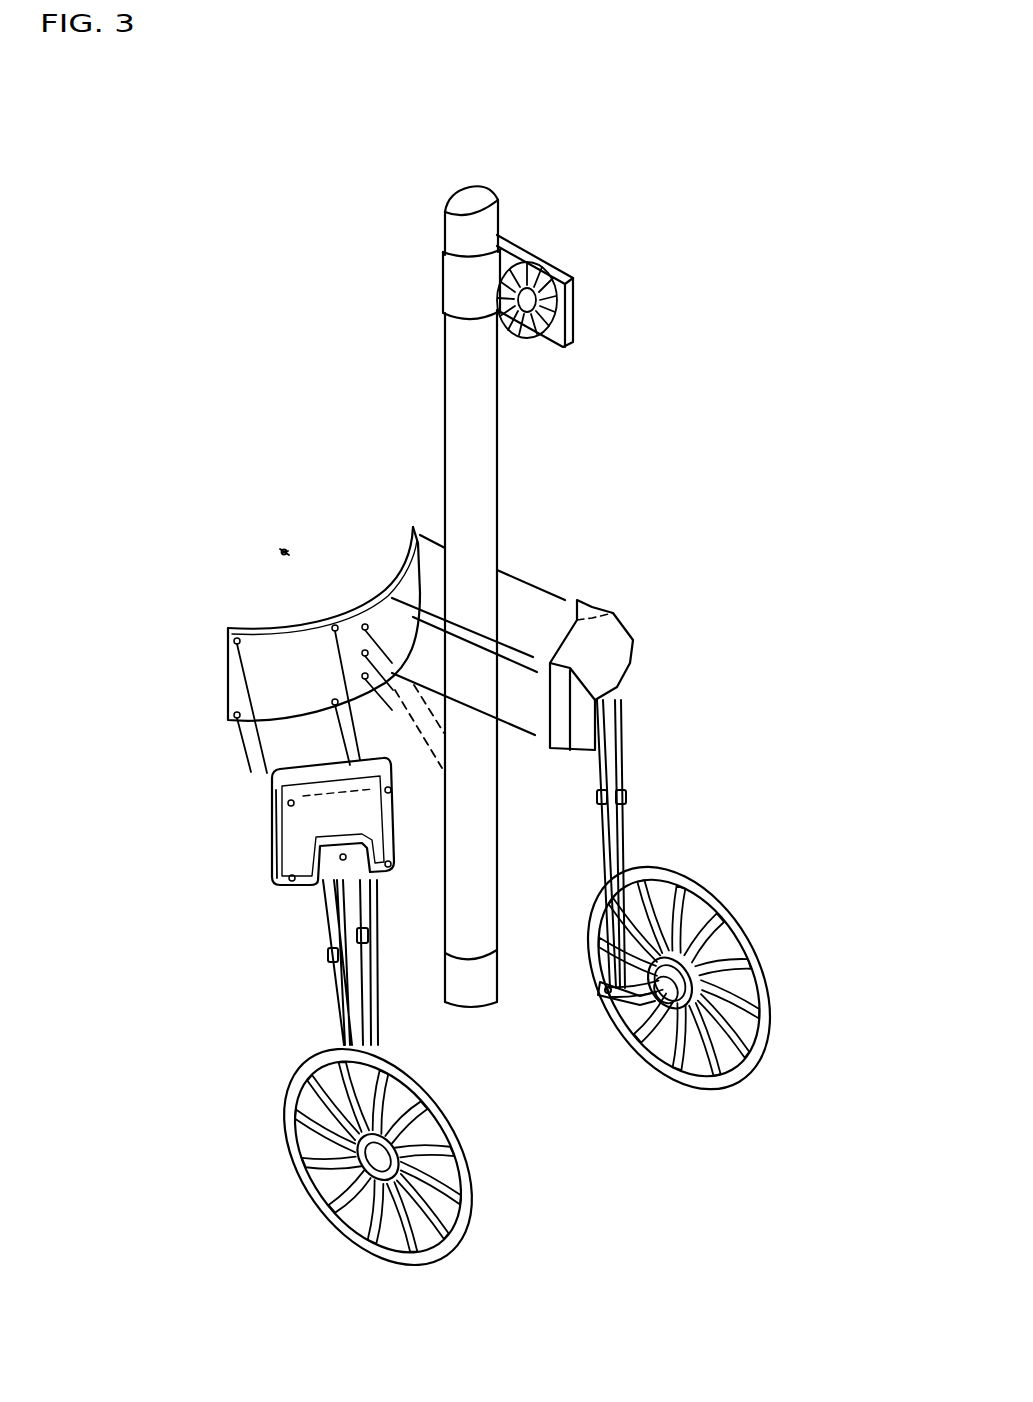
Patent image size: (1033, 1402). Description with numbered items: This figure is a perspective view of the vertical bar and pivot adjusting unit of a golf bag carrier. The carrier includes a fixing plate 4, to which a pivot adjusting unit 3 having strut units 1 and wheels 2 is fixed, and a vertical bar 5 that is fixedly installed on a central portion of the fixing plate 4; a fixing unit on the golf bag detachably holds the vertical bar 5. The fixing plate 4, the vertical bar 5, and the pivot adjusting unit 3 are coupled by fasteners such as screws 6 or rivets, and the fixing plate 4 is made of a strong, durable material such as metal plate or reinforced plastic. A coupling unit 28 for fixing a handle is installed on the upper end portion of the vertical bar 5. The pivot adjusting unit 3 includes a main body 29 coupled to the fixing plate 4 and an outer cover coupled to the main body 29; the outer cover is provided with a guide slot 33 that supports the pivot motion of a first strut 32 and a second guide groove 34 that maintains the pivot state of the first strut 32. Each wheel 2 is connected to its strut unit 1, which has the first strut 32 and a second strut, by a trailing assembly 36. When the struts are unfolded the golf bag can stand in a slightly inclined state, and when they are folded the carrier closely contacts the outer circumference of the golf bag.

The strut unit 1 is at (650, 803).
The wheel 2 is at (781, 964).
The pivot adjusting unit 3 is at (654, 655).
The fixing plate 4 is at (293, 630).
The vertical bar 5 is at (482, 437).
The screw 6 is at (285, 549).
The coupling unit 28 is at (572, 294).
The main body 29 is at (295, 770).
The first strut 32 is at (328, 928).
The guide slot 33 is at (308, 872).
The second guide groove 34 is at (307, 845).
The trailing assembly 36 is at (638, 1008).